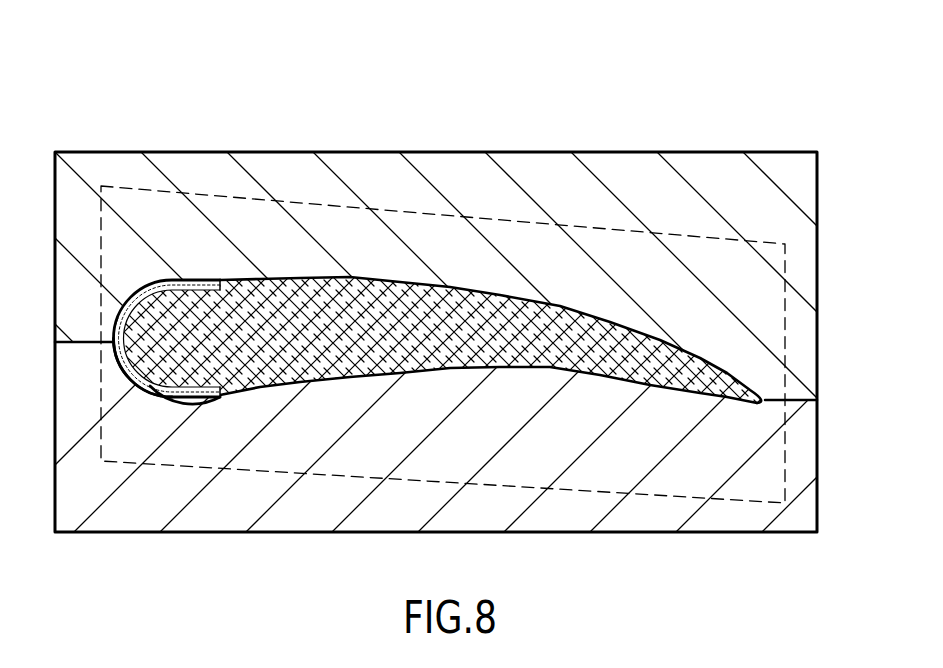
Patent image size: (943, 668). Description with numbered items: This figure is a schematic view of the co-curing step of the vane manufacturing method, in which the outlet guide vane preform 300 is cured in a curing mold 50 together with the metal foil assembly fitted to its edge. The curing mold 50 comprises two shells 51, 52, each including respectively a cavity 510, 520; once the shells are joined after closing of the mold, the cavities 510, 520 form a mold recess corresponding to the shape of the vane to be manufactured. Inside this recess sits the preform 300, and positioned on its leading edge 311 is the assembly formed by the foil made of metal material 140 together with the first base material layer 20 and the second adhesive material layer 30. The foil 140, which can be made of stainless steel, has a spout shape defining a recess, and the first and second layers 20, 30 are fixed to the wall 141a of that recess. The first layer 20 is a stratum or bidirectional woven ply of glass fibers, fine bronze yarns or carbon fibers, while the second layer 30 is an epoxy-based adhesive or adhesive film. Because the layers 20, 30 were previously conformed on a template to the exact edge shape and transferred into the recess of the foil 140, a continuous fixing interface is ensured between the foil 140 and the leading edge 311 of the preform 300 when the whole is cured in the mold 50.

The curing mold 50 is at (209, 96).
The shell 51 is at (728, 521).
The shell 52 is at (100, 165).
The first base material layer 20 is at (163, 388).
The second adhesive material layer 30 is at (124, 373).
The leading edge 311 is at (117, 331).
The foil made of metal material 140 is at (197, 279).
The wall of the recess 141a is at (148, 306).
The outlet guide vane preform 300 is at (337, 354).
The cavity 510 is at (517, 355).
The cavity 520 is at (378, 281).